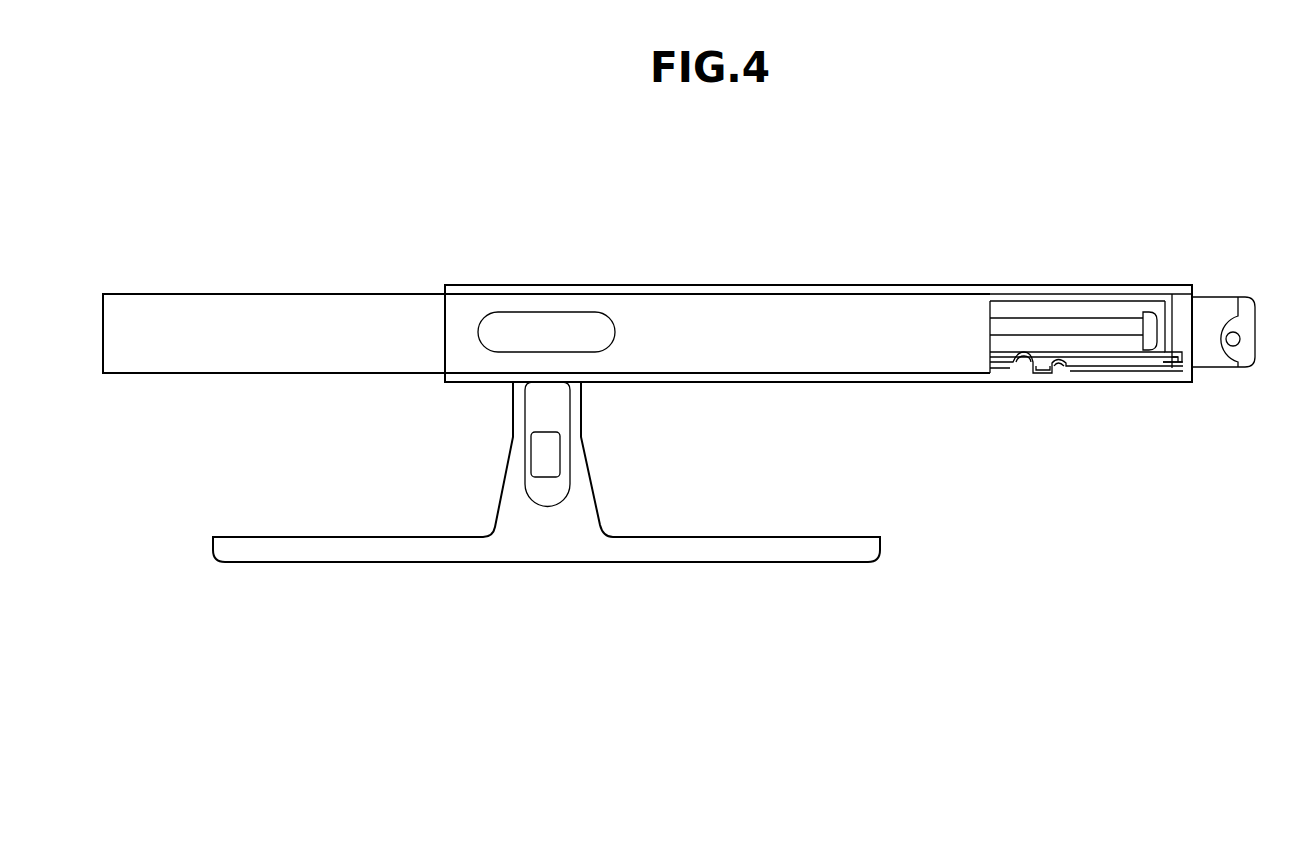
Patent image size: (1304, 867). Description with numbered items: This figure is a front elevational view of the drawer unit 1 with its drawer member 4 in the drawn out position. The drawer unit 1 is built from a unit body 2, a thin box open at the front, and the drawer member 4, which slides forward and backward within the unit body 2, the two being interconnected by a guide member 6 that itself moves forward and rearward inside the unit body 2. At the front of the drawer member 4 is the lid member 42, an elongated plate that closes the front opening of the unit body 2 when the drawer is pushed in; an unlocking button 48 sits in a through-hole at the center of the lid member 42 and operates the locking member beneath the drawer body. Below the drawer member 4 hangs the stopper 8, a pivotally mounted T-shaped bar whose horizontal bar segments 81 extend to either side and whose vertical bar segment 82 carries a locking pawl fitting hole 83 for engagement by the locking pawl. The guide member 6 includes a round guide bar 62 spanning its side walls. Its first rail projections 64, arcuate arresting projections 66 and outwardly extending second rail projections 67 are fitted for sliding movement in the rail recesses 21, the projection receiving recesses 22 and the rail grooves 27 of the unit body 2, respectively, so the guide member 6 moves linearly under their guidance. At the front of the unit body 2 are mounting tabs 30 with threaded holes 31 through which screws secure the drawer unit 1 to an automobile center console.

The drawer unit 1 is at (1150, 215).
The unit body 2 is at (1082, 285).
The drawer member 4 is at (323, 294).
The guide member 6 is at (1180, 313).
The stopper 8 is at (587, 553).
The rail recesses 21 is at (1072, 373).
The projection receiving recesses 22 is at (1040, 372).
The rail grooves 27 is at (1180, 366).
The mounting tabs 30 is at (1247, 320).
The threaded holes 31 is at (1240, 343).
The lid member 42 is at (302, 358).
The unlocking button 48 is at (555, 328).
The guide bar 62 is at (1027, 330).
The first rail projections 64 is at (1060, 367).
The arresting projections 66 is at (1020, 360).
The second rail projections 67 is at (1170, 360).
The horizontal bar segments 81 is at (385, 552).
The vertical bar segment 82 is at (577, 460).
The locking pawl fitting hole 83 is at (542, 450).